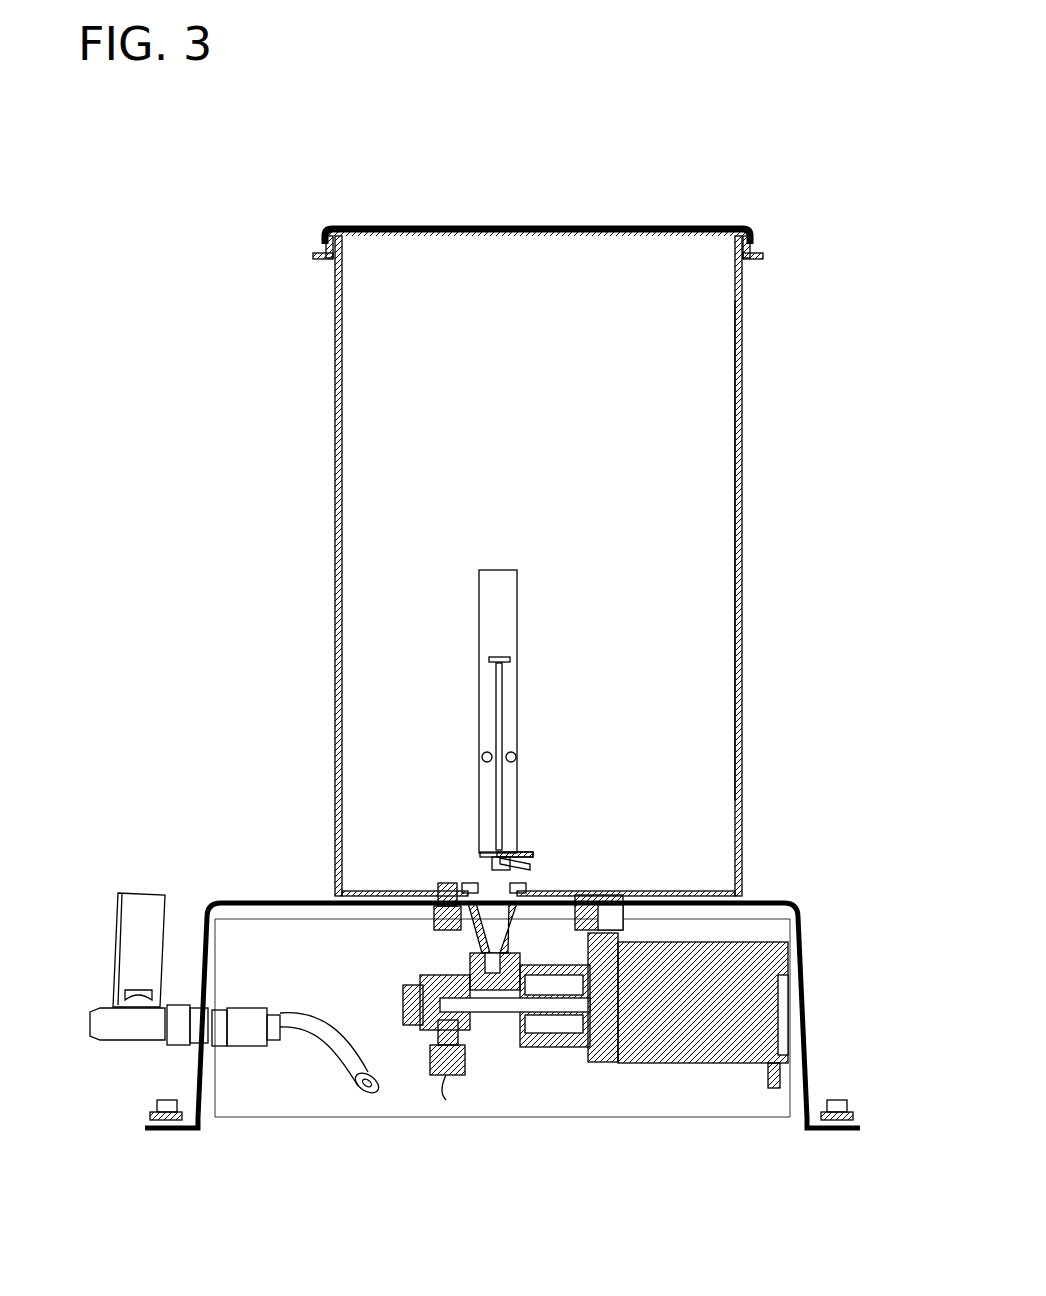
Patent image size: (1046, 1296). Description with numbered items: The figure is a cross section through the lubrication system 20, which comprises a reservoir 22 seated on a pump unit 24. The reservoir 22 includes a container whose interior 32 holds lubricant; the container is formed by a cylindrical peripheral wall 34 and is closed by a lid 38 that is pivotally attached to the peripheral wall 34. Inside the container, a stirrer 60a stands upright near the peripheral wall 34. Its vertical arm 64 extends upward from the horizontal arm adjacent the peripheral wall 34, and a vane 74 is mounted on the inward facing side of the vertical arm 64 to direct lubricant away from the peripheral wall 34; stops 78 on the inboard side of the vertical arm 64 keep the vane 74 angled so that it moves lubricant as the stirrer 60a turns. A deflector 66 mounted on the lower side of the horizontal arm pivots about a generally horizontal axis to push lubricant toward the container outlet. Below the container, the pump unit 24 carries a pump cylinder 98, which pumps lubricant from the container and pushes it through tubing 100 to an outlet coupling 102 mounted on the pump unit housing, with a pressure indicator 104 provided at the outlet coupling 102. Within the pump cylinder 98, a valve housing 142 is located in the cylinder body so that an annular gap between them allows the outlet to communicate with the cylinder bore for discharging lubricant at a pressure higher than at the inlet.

The lubrication system 20 is at (804, 104).
The reservoir 22 is at (333, 226).
The pump unit 24 is at (266, 898).
The interior 32 is at (724, 371).
The peripheral wall 34 is at (744, 456).
The lid 38 is at (680, 231).
The stirrer 60a is at (521, 580).
The vertical arm 64 is at (516, 797).
The deflector 66 is at (530, 866).
The vane 74 is at (500, 692).
The stops 78 is at (481, 757).
The pump cylinder 98 is at (491, 1042).
The tubing 100 is at (292, 1045).
The outlet coupling 102 is at (180, 1047).
The pressure indicator 104 is at (118, 924).
The valve housing 142 is at (690, 1065).